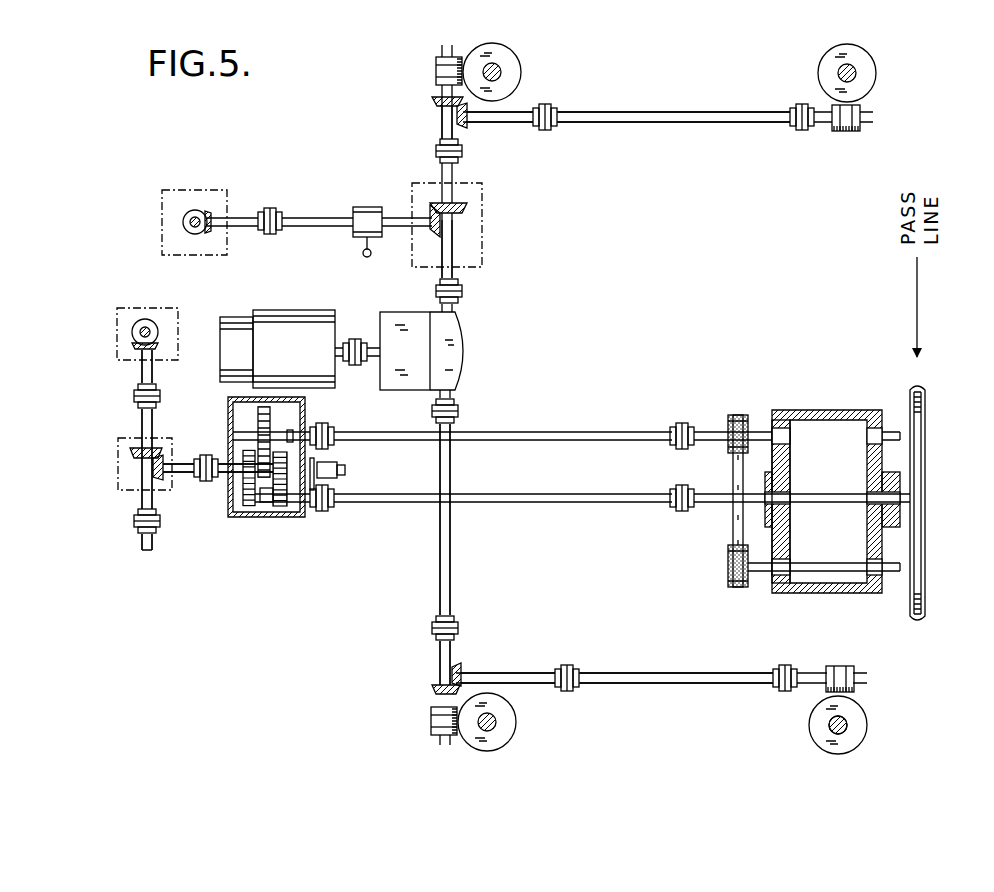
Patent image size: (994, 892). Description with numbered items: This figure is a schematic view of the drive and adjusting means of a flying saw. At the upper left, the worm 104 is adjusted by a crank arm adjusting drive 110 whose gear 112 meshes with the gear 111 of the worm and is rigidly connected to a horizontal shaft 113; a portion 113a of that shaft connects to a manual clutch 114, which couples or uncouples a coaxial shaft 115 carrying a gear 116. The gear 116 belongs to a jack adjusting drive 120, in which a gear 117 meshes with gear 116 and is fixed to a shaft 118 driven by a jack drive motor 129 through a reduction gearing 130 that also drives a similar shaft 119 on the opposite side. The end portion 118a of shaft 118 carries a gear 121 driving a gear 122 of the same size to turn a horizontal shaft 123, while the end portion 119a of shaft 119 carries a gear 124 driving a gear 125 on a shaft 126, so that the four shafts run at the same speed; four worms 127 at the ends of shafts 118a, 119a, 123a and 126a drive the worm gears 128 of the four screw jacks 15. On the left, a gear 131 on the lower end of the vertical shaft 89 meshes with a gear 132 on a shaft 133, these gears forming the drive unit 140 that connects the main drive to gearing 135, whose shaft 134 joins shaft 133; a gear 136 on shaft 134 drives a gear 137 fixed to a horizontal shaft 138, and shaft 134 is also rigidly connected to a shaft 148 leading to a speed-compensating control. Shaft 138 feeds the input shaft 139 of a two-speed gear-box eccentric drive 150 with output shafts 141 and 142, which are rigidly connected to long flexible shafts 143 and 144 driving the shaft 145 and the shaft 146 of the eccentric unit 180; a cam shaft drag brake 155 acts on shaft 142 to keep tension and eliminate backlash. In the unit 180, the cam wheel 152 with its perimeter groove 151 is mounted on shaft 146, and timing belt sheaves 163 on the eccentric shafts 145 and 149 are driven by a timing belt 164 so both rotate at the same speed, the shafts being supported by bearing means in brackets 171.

The screw jack 15 is at (846, 720).
The vertical shaft 89 is at (146, 326).
The worm 104 is at (188, 218).
The crank arm adjusting drive 110 is at (178, 186).
The gear 111 is at (192, 226).
The gear 112 is at (210, 216).
The horizontal shaft 113 is at (240, 227).
The shaft portion 113a is at (328, 227).
The manual clutch 114 is at (367, 208).
The coaxial shaft 115 is at (402, 228).
The gear 116 is at (434, 234).
The gear 117 is at (468, 208).
The shaft 118 is at (455, 250).
The end portion of shaft 118 118a is at (444, 128).
The shaft 119 is at (440, 561).
The end portion of shaft 119 119a is at (440, 657).
The jack adjusting drive 120 is at (486, 220).
The gear 121 is at (433, 99).
The gear 122 is at (465, 122).
The horizontal shaft 123 is at (520, 115).
The end portion of shaft 123 123a is at (672, 112).
The gear 124 is at (434, 691).
The gear 125 is at (458, 668).
The shaft 126 is at (532, 674).
The end portion of shaft 126 126a is at (652, 674).
The worm 127 is at (437, 72).
The worm gear 128 is at (510, 60).
The jack drive motor 129 is at (293, 320).
The reduction gearing 130 is at (462, 338).
The gear 131 is at (157, 328).
The gear 132 is at (155, 348).
The shaft 133 is at (142, 374).
The shaft 134 is at (142, 501).
The gearing 135 is at (114, 458).
The gear 136 is at (152, 452).
The gear 137 is at (162, 462).
The horizontal shaft 138 is at (183, 473).
The input shaft 139 is at (222, 474).
The drive unit 140 is at (114, 306).
The output shaft 141 is at (303, 432).
The output shaft 142 is at (300, 502).
The long flexible shaft 143 is at (573, 432).
The long flexible shaft 144 is at (578, 494).
The eccentric shaft 145 is at (707, 432).
The shaft 146 is at (833, 494).
The shaft 148 is at (152, 543).
The eccentric shaft 149 is at (756, 573).
The two-speed gear-box eccentric drive 150 is at (262, 522).
The groove 151 is at (920, 385).
The cam wheel 152 is at (926, 460).
The cam shaft drag brake 155 is at (326, 470).
The timing belt sheave 163 is at (746, 418).
The timing belt 164 is at (735, 534).
The bracket 171 is at (786, 537).
The eccentric unit 180 is at (823, 596).